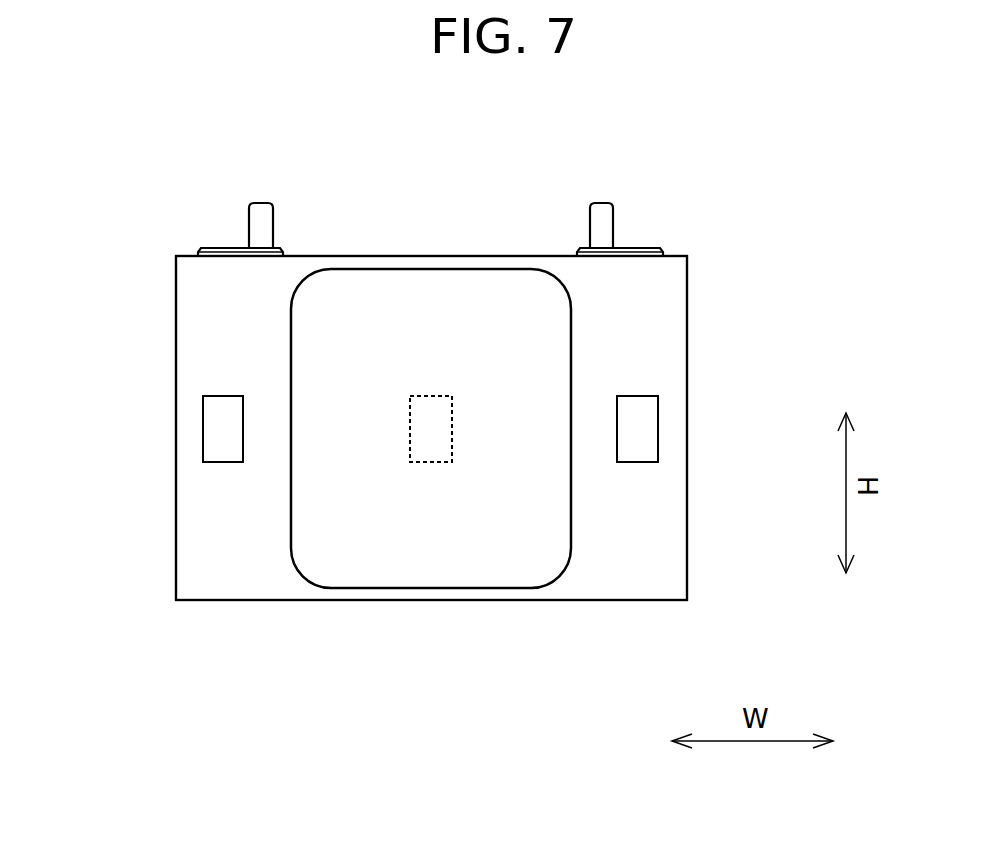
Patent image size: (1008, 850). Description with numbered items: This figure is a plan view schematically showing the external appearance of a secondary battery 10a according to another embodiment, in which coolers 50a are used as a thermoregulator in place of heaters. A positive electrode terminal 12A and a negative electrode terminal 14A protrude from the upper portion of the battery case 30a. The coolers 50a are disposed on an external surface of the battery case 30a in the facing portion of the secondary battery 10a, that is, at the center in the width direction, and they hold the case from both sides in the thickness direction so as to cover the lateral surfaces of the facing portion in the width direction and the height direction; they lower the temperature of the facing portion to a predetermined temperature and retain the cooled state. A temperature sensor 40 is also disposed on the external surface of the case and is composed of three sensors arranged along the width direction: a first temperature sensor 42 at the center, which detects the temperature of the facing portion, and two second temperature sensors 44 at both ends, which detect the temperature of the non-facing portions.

The secondary battery 10a is at (733, 212).
The positive electrode terminal 12A is at (259, 203).
The negative electrode terminal 14A is at (603, 203).
The battery case 30a is at (168, 290).
The temperature sensor 40 is at (622, 668).
The first temperature sensor 42 is at (425, 462).
The second temperature sensor 44 is at (223, 462).
The cooler 50a is at (548, 342).